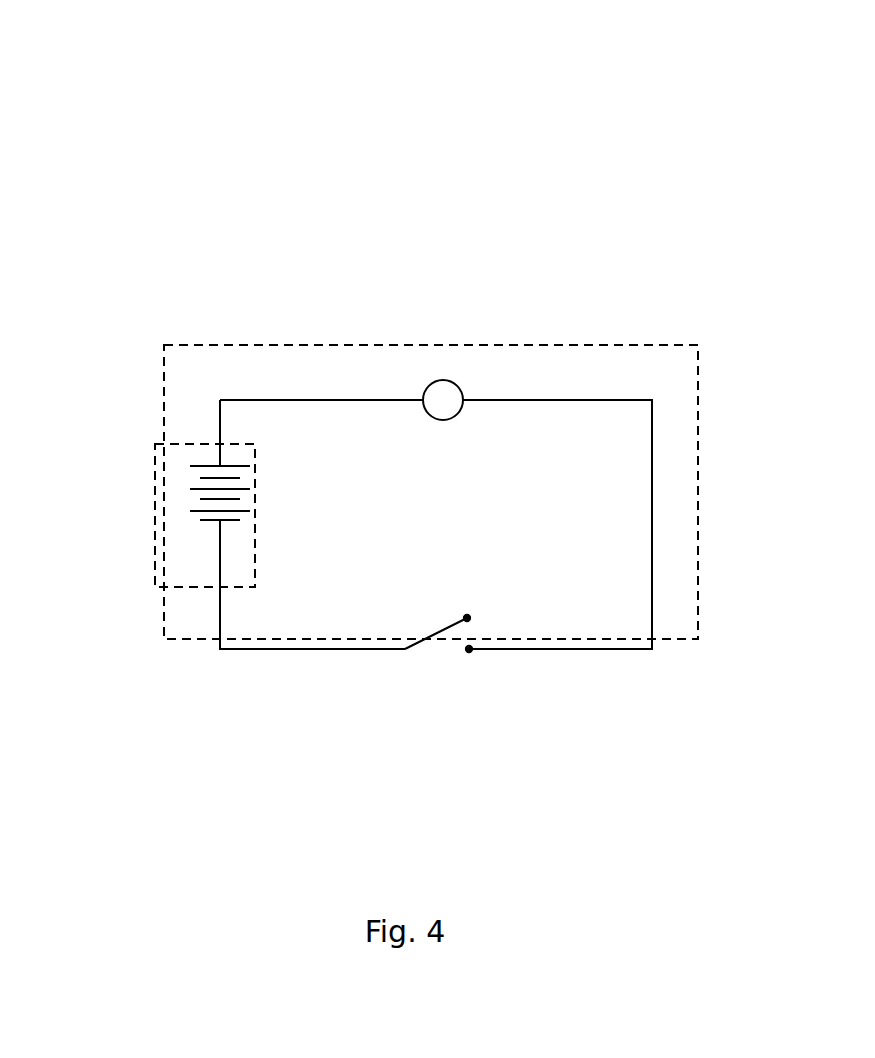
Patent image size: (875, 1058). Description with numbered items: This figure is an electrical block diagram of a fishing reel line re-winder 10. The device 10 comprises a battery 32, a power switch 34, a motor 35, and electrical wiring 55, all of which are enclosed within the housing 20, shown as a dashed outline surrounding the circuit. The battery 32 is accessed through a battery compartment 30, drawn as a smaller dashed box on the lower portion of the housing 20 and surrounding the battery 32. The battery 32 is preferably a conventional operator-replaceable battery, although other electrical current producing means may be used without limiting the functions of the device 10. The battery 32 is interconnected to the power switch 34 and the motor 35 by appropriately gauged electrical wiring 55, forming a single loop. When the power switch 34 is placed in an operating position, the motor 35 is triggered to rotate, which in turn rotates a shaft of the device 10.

The fishing reel line re-winder 10 is at (778, 176).
The housing 20 is at (166, 377).
The battery compartment 30 is at (238, 587).
The battery 32 is at (190, 511).
The power switch 34 is at (405, 649).
The motor 35 is at (439, 378).
The electrical wiring 55 is at (565, 400).